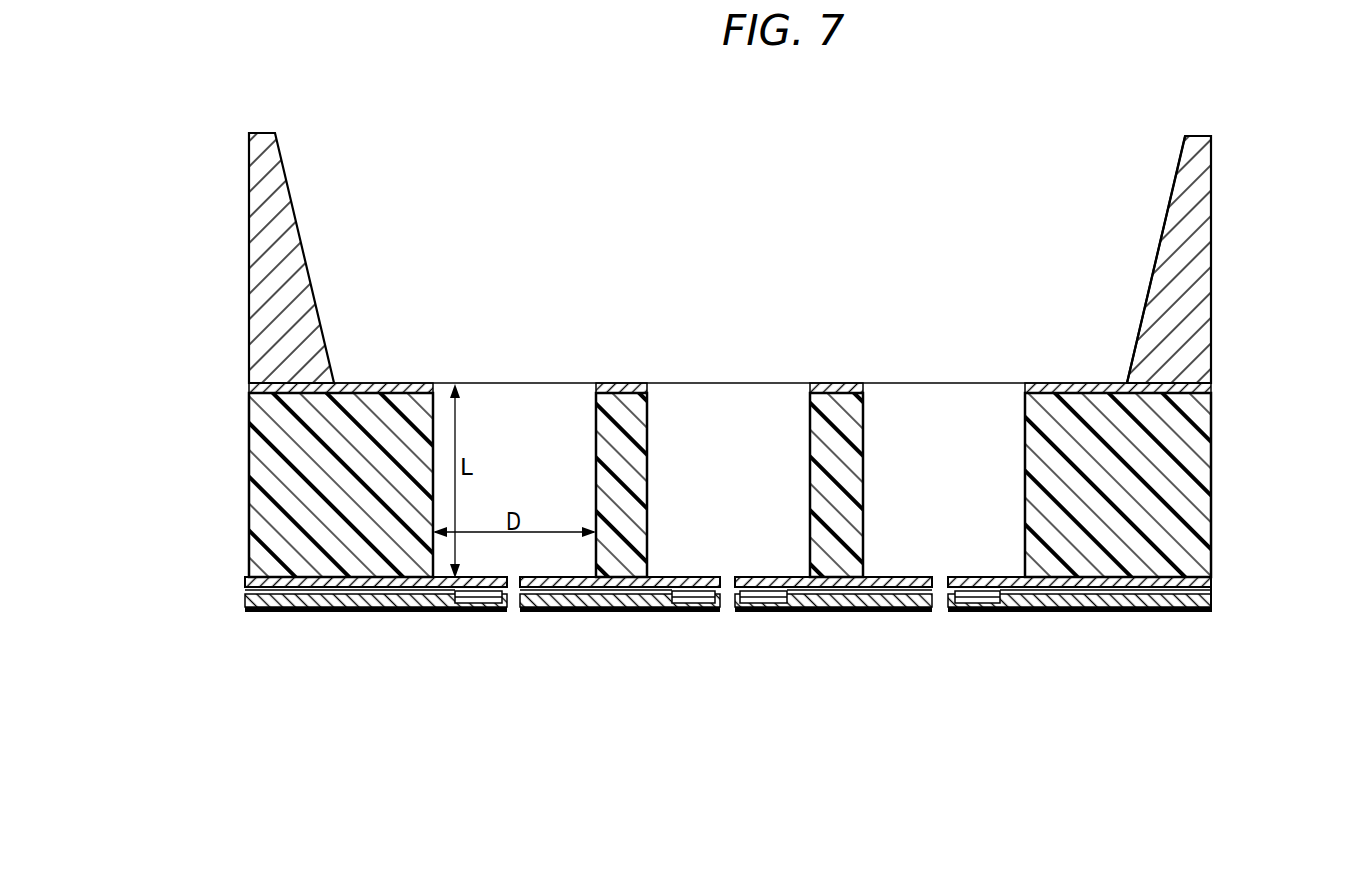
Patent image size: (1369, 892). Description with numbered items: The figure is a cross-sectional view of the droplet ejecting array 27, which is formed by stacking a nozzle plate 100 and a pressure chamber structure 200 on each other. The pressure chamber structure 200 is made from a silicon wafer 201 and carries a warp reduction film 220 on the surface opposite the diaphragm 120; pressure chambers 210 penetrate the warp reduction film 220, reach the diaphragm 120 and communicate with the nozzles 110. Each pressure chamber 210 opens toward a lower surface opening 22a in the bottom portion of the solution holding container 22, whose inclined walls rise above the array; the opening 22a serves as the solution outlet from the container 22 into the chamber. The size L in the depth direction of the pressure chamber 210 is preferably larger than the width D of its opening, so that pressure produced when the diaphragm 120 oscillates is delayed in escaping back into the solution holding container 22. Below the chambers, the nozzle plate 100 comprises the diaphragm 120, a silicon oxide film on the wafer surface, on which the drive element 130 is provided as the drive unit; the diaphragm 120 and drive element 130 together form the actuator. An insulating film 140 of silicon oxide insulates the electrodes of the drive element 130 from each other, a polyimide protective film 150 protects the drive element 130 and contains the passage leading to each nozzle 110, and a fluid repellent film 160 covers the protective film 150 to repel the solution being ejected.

The solution holding container 22 is at (1211, 158).
The lower surface opening 22a is at (1177, 163).
The droplet ejecting array 27 is at (1191, 638).
The nozzle plate 100 is at (781, 609).
The nozzle 110 is at (752, 609).
The diaphragm 120 is at (1212, 582).
The drive element 130 is at (480, 612).
The insulating film 140 is at (1212, 591).
The protective film 150 is at (1211, 600).
The fluid repellent film 160 is at (1211, 609).
The pressure chamber structure 200 is at (785, 474).
The silicon wafer 201 is at (785, 474).
The pressure chamber 210 is at (1003, 428).
The warp reduction film 220 is at (1212, 388).